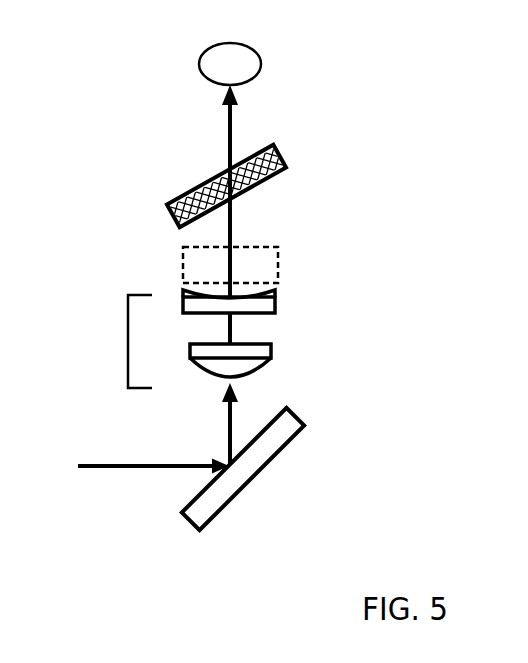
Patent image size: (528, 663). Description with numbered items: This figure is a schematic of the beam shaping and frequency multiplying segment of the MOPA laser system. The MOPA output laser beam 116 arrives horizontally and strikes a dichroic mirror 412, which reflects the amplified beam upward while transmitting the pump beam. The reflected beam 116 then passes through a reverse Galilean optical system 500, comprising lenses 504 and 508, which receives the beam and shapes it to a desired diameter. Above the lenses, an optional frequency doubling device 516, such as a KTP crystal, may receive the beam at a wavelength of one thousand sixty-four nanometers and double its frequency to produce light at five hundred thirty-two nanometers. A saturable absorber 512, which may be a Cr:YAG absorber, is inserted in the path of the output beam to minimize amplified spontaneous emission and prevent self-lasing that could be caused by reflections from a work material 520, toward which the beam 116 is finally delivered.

The MOPA output laser beam 116 is at (140, 466).
The dichroic mirror 412 is at (297, 412).
The reverse Galilean optical system 500 is at (128, 355).
The lens 504 is at (271, 344).
The lens 508 is at (183, 291).
The saturable absorber 512 is at (168, 200).
The frequency doubling device 516 is at (280, 268).
The work material 520 is at (259, 60).